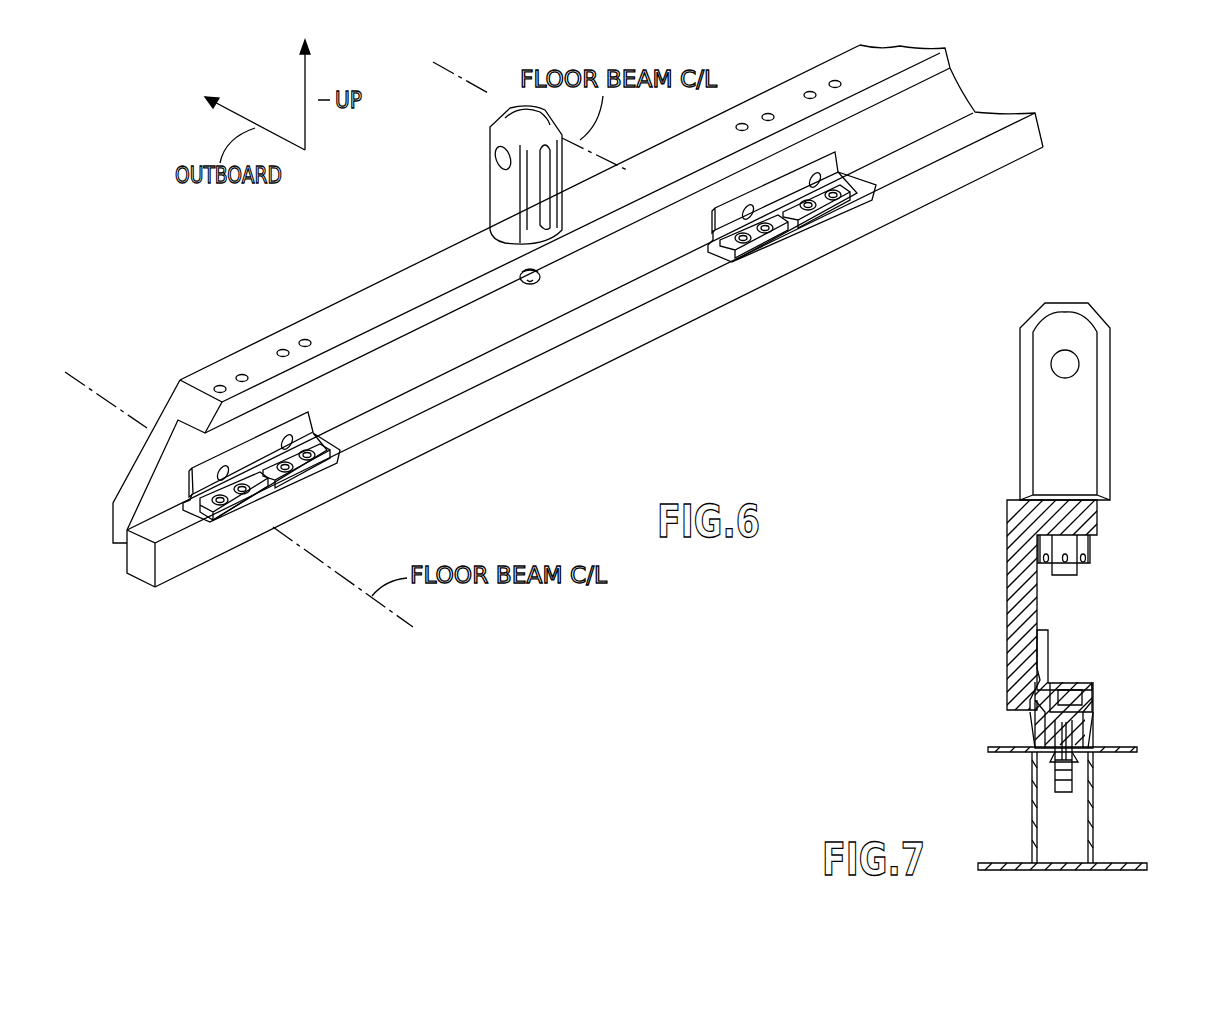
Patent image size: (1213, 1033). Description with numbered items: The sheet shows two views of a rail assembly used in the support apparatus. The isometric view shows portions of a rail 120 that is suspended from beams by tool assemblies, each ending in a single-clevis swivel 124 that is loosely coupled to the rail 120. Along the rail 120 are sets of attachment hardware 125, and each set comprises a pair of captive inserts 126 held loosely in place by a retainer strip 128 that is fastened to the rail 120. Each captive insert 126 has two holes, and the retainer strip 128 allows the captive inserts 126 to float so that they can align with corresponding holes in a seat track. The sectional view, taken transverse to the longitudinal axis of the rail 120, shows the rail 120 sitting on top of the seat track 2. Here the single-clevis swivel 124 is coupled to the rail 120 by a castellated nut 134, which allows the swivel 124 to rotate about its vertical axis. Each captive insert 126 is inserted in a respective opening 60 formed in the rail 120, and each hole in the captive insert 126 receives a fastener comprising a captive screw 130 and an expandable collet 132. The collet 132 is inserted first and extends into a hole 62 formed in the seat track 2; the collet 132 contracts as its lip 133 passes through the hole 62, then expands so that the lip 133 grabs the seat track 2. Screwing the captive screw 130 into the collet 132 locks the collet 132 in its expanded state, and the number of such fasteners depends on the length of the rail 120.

In FIG. 7, the seat track 2 is at (1117, 745).
In FIG. 7, the opening 60 is at (1075, 722).
In FIG. 7, the hole 62 is at (1033, 748).
In FIG. 6, the rail 120 is at (275, 332).
In FIG. 7, the rail 120 is at (1005, 600).
In FIG. 6, the single-clevis swivel 124 is at (500, 185).
In FIG. 7, the single-clevis swivel 124 is at (1112, 385).
In FIG. 6, the attachment hardware 125 is at (247, 515).
In FIG. 6, the captive insert 126 is at (250, 500).
In FIG. 7, the captive insert 126 is at (1038, 690).
In FIG. 6, the retainer strip 128 is at (307, 413).
In FIG. 7, the retainer strip 128 is at (1043, 643).
In FIG. 7, the captive screw 130 is at (1065, 687).
In FIG. 7, the expandable collet 132 is at (1060, 728).
In FIG. 7, the lip 133 is at (1075, 762).
In FIG. 7, the castellated nut 134 is at (1088, 552).